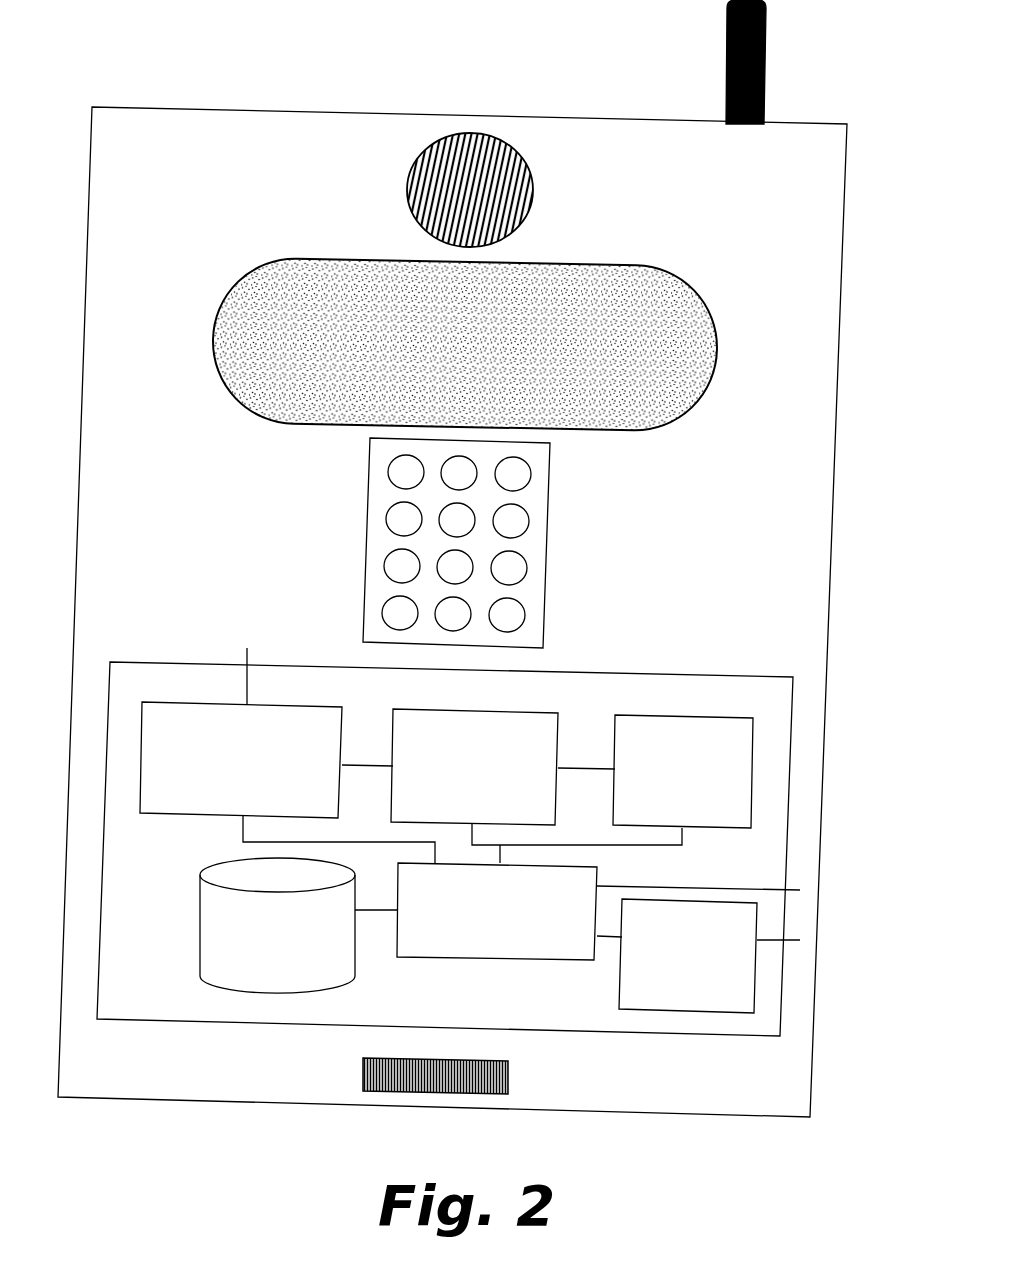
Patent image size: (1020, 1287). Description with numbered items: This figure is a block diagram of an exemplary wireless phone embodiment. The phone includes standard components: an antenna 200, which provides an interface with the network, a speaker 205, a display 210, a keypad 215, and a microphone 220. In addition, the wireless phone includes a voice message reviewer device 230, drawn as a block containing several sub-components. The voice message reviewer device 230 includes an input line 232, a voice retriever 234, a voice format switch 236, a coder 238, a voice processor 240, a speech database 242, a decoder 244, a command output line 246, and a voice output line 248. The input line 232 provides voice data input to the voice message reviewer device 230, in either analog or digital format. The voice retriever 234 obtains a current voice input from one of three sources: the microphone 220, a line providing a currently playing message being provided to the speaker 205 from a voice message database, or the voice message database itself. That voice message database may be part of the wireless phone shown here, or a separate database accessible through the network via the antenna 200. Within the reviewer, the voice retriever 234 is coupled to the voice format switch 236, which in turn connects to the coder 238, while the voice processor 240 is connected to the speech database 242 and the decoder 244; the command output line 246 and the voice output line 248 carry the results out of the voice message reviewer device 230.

The antenna 200 is at (726, 66).
The speaker 205 is at (407, 190).
The display 210 is at (213, 338).
The keypad 215 is at (366, 540).
The microphone 220 is at (363, 1073).
The voice message reviewer device 230 is at (172, 662).
The input line 232 is at (247, 656).
The voice retriever 234 is at (204, 818).
The voice format switch 236 is at (477, 709).
The coder 238 is at (685, 715).
The voice processor 240 is at (494, 960).
The speech database 242 is at (198, 921).
The decoder 244 is at (620, 983).
The command output line 246 is at (797, 890).
The voice output line 248 is at (795, 940).